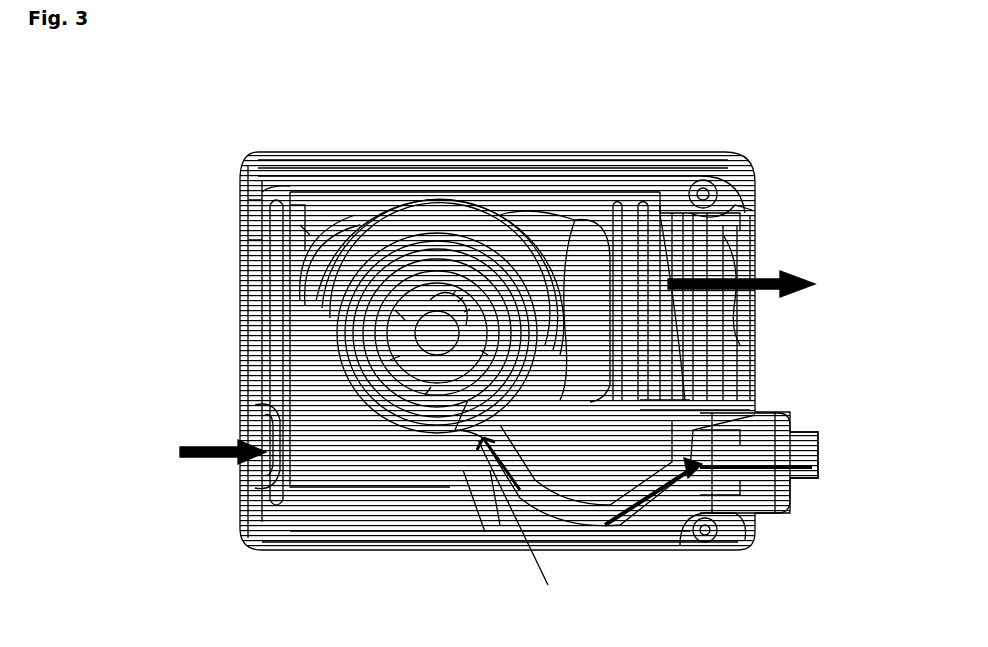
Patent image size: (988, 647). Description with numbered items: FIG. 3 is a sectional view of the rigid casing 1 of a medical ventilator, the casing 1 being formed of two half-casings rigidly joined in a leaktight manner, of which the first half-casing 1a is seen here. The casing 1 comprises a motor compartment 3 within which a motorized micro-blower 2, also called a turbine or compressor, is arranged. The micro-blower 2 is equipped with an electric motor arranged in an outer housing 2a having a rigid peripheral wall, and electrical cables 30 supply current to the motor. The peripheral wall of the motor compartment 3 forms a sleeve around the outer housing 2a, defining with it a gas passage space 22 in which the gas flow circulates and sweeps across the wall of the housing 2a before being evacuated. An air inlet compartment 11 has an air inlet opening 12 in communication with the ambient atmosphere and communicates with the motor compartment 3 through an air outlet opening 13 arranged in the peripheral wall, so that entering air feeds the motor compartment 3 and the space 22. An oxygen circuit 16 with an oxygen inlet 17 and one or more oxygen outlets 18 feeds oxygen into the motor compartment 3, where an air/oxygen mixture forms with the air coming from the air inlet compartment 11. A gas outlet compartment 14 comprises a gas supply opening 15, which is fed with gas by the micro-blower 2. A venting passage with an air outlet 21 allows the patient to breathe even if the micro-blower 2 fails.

The rigid casing 1 is at (637, 155).
The first half-casing 1a is at (678, 555).
The motorized micro-blower 2 is at (363, 258).
The outer housing 2a is at (440, 217).
The motor compartment 3 is at (262, 192).
The air inlet compartment 11 is at (300, 237).
The air inlet opening 12 is at (230, 497).
The air outlet opening 13 is at (262, 232).
The gas outlet compartment 14 is at (760, 195).
The gas supply opening 15 is at (752, 320).
The oxygen circuit 16 is at (755, 347).
The oxygen inlet 17 is at (782, 500).
The oxygen outlets 18 is at (440, 490).
The air outlet 21 is at (815, 425).
The gas passage space 22 is at (440, 235).
The electrical cables 30 is at (505, 215).